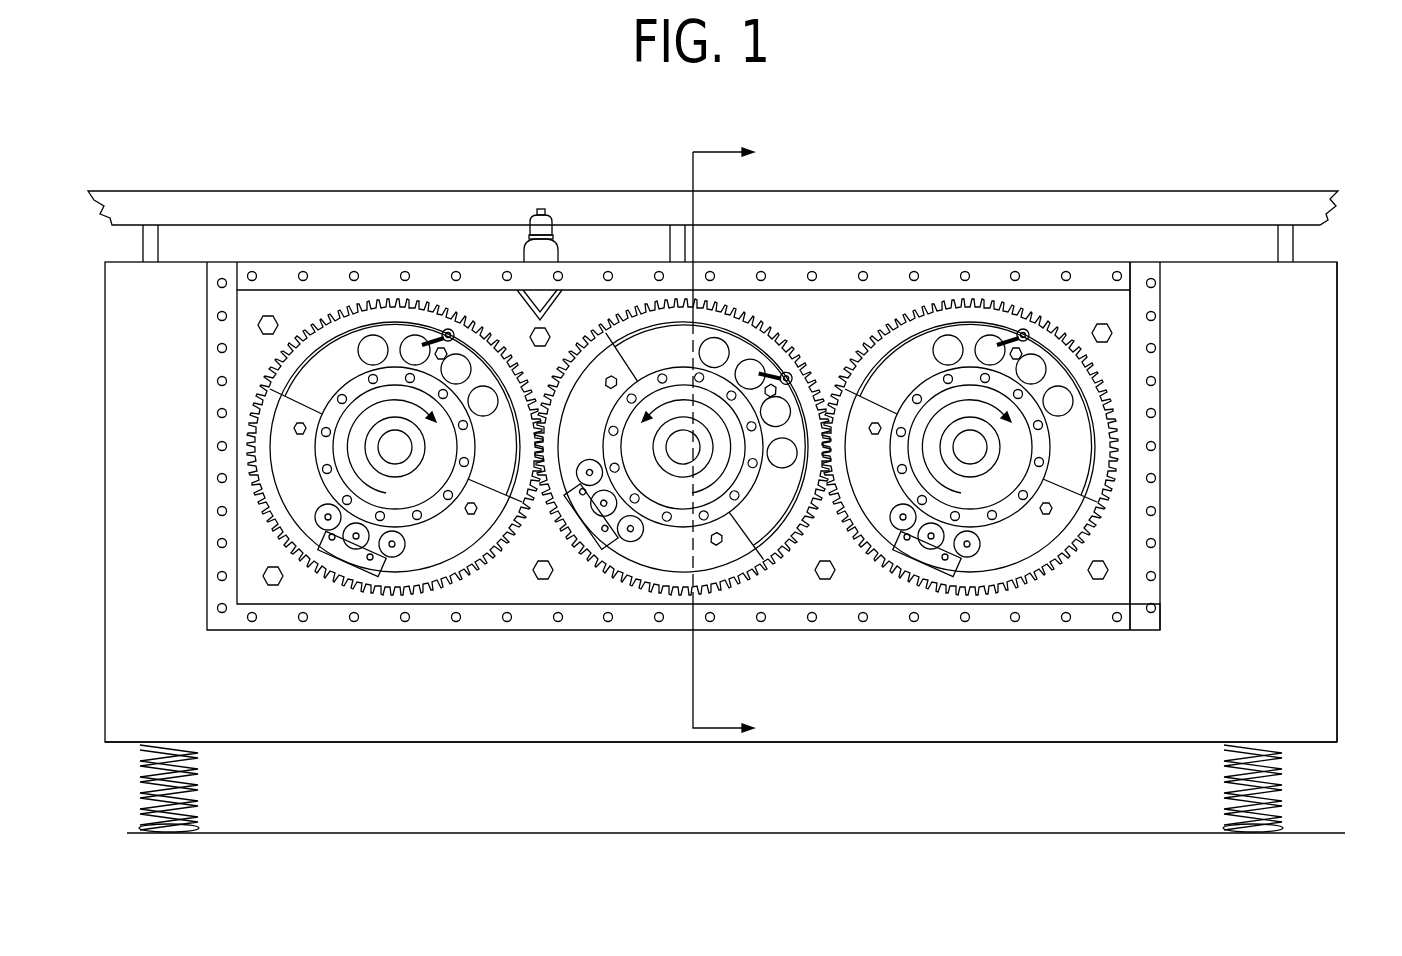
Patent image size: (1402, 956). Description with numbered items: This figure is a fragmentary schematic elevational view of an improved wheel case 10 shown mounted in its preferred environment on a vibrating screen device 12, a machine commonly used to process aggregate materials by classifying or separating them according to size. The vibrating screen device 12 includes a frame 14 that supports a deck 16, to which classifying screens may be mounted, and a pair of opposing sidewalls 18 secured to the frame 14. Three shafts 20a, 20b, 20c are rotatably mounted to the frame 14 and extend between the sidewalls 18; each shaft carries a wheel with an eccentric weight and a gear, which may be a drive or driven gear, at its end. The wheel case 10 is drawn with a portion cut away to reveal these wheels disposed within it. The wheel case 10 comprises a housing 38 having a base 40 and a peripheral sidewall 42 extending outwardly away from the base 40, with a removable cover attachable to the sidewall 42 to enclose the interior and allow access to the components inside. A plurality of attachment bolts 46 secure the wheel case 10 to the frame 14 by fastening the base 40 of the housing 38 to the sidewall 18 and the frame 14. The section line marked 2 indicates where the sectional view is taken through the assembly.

The wheel case 10 is at (542, 634).
The vibrating screen device 12 is at (1300, 413).
The frame 14 is at (1337, 326).
The deck 16 is at (1078, 192).
The sidewall 18 is at (1248, 653).
The shaft 20a is at (412, 472).
The shaft 20b is at (677, 477).
The shaft 20c is at (983, 477).
The housing 38 is at (1168, 386).
The base 40 is at (682, 495).
The peripheral sidewall 42 is at (390, 262).
The attachment bolts 46 is at (260, 325).
The section line 2- 2 is at (733, 435).